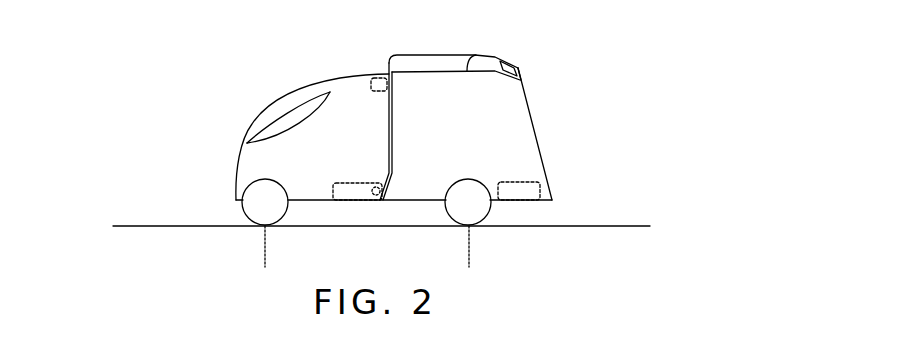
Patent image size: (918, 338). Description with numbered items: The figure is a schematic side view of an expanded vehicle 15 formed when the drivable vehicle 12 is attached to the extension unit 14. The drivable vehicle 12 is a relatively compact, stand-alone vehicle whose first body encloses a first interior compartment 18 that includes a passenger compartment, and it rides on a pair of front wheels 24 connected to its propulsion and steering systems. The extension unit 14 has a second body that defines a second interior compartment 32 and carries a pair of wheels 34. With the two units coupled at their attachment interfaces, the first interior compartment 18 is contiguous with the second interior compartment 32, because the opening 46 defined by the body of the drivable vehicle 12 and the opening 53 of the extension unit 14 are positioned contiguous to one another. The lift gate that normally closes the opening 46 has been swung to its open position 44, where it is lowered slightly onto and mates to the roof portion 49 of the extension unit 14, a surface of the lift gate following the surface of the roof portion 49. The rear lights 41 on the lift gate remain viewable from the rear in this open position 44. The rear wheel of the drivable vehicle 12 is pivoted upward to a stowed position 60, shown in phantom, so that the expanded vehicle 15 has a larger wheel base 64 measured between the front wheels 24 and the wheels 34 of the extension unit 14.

The expanded vehicle 15 is at (237, 91).
The drivable vehicle 12 is at (307, 98).
The first interior compartment 18 is at (370, 116).
The opening 53 is at (387, 160).
The opening 46 is at (395, 124).
The stowed position 60 is at (353, 183).
The front wheels 24 is at (276, 211).
The wheels 34 is at (479, 211).
The second interior compartment 32 is at (471, 139).
The open position 44 is at (453, 55).
The roof portion 49 is at (470, 62).
The rear lights 41 is at (518, 68).
The extension unit 14 is at (535, 135).
The wheel base 64 is at (468, 257).